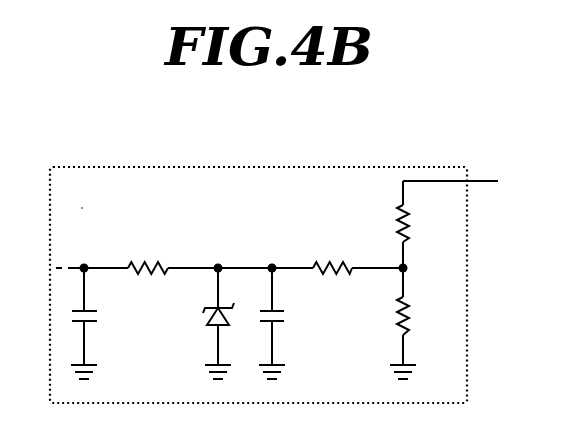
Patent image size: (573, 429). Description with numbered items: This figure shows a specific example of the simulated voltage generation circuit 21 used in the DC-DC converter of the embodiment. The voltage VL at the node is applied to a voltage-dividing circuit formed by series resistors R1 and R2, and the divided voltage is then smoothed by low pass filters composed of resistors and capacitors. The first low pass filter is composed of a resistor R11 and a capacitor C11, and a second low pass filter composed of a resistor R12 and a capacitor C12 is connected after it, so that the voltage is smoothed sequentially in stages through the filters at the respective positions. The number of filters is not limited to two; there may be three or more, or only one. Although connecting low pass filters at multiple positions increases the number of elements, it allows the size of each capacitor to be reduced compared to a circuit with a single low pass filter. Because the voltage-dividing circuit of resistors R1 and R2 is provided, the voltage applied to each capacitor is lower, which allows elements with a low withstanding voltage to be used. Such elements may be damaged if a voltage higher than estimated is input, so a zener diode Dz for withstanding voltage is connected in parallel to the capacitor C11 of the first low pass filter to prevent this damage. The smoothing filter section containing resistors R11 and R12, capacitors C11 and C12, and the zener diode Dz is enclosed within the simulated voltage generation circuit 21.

The simulated voltage generation circuit 21 is at (313, 167).
The resistor R1 is at (424, 224).
The resistor R2 is at (423, 323).
The resistor R11 is at (332, 285).
The resistor R12 is at (148, 285).
The capacitor C11 is at (292, 323).
The capacitor C12 is at (103, 323).
The zener diode Dz is at (205, 323).
The voltage VL is at (457, 166).